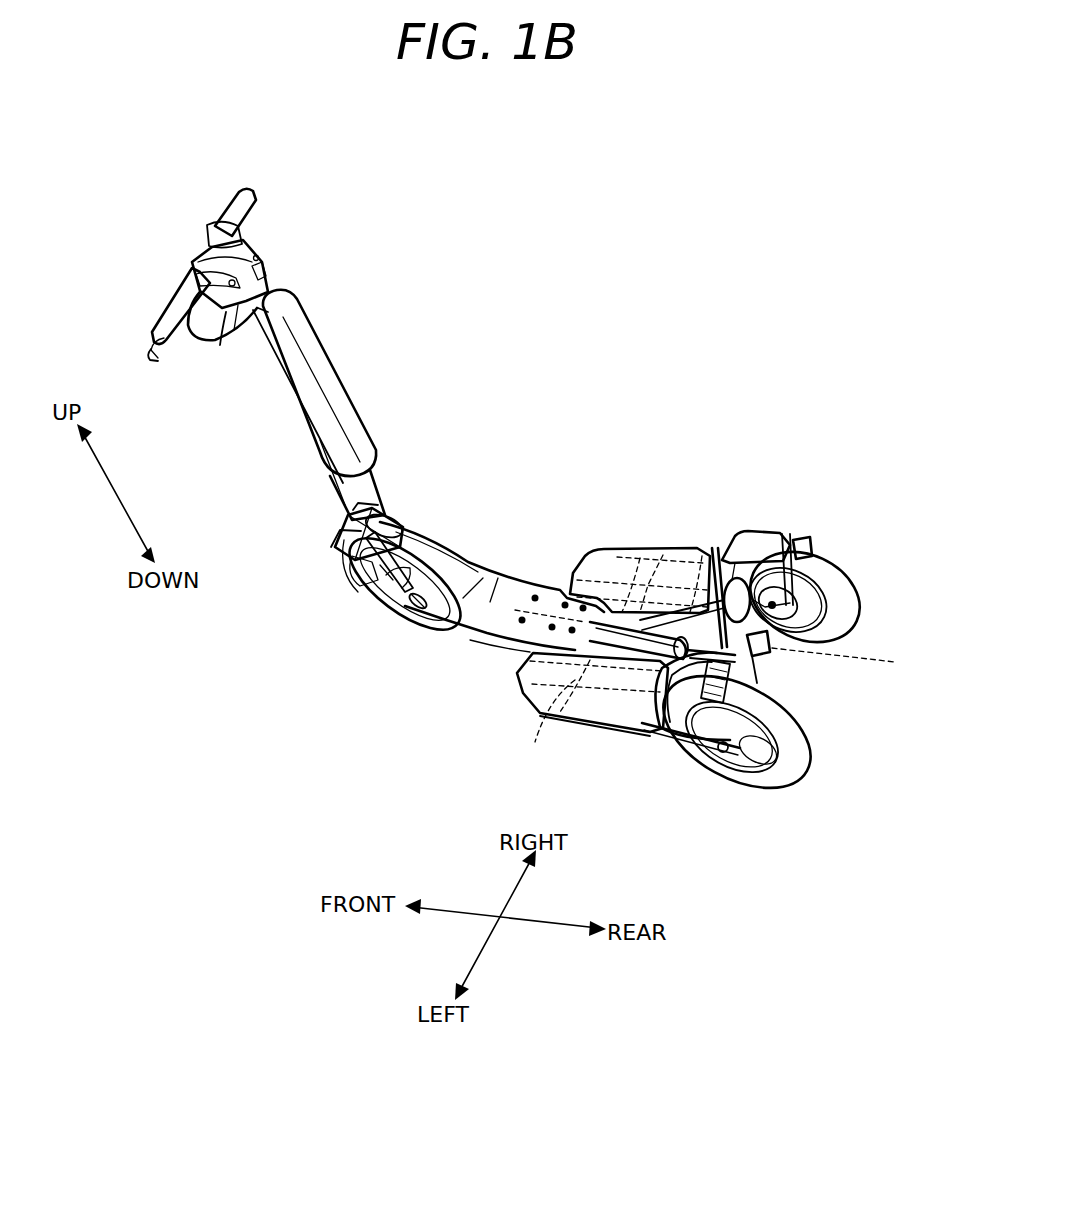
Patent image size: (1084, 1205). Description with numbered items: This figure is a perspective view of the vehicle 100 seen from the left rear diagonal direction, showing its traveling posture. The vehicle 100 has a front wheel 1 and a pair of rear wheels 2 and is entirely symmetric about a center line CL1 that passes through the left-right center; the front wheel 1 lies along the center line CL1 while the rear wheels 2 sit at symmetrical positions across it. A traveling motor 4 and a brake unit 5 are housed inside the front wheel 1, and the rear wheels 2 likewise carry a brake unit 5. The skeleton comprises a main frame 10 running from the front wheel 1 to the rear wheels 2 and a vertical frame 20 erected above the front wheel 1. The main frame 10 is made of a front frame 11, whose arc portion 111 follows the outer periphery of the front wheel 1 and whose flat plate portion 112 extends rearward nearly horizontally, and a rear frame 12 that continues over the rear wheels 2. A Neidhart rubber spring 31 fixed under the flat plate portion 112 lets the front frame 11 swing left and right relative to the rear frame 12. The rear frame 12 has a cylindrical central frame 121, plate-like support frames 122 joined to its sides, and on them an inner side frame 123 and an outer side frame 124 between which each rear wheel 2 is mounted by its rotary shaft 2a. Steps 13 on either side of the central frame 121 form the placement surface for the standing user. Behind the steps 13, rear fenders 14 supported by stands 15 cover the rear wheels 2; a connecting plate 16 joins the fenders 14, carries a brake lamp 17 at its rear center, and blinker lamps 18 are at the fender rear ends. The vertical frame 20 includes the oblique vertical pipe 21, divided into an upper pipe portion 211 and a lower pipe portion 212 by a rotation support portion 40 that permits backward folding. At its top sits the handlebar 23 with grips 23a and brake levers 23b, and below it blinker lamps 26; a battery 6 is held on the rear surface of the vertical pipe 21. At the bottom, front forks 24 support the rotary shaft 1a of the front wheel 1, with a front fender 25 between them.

The vehicle 100 is at (591, 231).
The front wheel 1 is at (393, 612).
The rotary shaft 1a is at (429, 613).
The rear wheel 2 is at (856, 581).
The rotary shaft 2a is at (710, 758).
The traveling motor 4 is at (393, 601).
The brake unit 5 is at (758, 770).
The battery 6 is at (335, 371).
The main frame 10 is at (471, 548).
The front frame 11 is at (479, 637).
The arc portion 111 is at (429, 546).
The flat plate portion 112 is at (506, 584).
The rear frame 12 is at (608, 625).
The central frame 121 is at (669, 641).
The support frame 122 is at (640, 558).
The inner side frame 123 is at (722, 545).
The outer side frame 124 is at (663, 555).
The step 13 is at (621, 550).
The rear fender 14 is at (758, 540).
The stand 15 is at (812, 547).
The connecting plate 16 is at (742, 684).
The brake lamp 17 is at (786, 600).
The blinker lamp 18 is at (793, 533).
The vertical frame 20 is at (290, 407).
The vertical pipe 21 is at (368, 490).
The upper pipe portion 211 is at (338, 480).
The lower pipe portion 212 is at (343, 547).
The handlebar 23 is at (200, 262).
The grip 23a is at (238, 198).
The brake lever 23b is at (158, 360).
The front fork 24 is at (392, 592).
The front fender 25 is at (360, 573).
The blinker lamp 26 is at (236, 338).
The Neidhart rubber spring 31 is at (549, 606).
The rotation support portion 40 is at (334, 522).
The center line CL1 is at (858, 661).